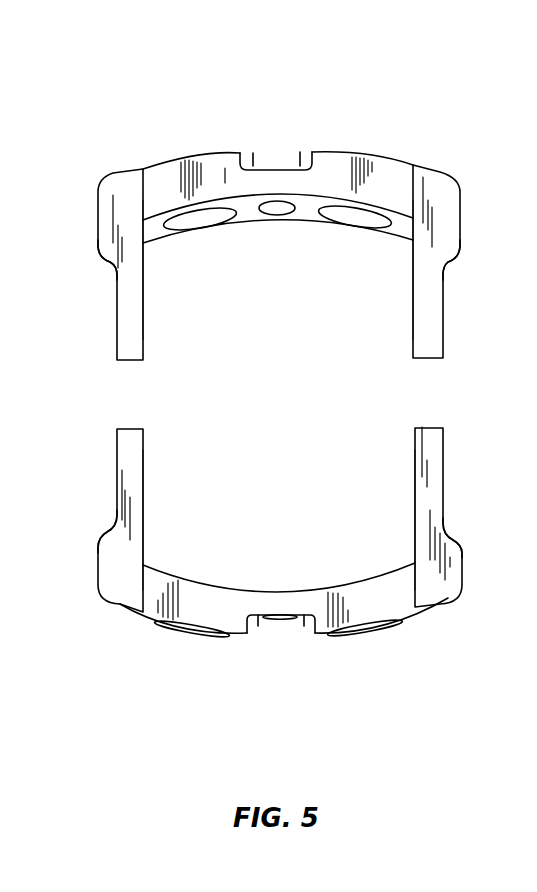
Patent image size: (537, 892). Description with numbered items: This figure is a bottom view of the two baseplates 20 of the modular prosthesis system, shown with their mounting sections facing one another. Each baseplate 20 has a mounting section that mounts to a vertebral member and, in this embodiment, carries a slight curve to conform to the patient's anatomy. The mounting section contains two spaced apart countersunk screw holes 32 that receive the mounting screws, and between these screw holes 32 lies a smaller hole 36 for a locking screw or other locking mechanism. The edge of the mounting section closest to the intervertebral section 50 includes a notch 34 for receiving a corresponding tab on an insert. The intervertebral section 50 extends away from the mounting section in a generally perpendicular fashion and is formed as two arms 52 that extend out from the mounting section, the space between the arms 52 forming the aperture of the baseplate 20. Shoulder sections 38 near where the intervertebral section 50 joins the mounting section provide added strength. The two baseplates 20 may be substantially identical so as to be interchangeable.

The baseplate 20 is at (364, 110).
The countersunk screw hole 32 is at (199, 222).
The notch 34 is at (276, 162).
The smaller hole 36 is at (277, 211).
The shoulder section 38 is at (100, 255).
The intervertebral section 50 is at (128, 338).
The arm 52 is at (135, 313).